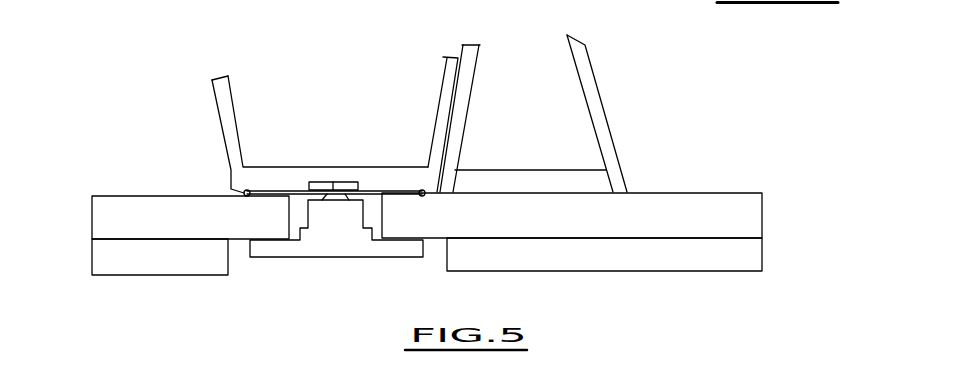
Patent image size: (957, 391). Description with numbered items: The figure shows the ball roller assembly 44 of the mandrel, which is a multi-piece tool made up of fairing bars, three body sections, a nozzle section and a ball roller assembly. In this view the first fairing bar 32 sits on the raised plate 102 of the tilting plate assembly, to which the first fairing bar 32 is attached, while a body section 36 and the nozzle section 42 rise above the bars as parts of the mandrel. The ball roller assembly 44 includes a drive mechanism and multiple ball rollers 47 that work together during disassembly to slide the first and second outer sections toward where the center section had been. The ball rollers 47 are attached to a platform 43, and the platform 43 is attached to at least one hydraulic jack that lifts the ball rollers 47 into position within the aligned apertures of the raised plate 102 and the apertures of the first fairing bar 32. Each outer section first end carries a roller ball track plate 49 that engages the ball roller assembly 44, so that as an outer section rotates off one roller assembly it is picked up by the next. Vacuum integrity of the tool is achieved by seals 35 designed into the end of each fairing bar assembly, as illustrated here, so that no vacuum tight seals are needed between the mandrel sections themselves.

The first fairing bar 32 is at (723, 192).
The seals 35 is at (244, 192).
The body section 36 is at (220, 114).
The nozzle section 42 is at (597, 91).
The platform 43 is at (396, 249).
The ball roller assembly 44 is at (333, 257).
The ball rollers 47 is at (333, 182).
The roller ball track plate 49 is at (338, 182).
The raised plate 102 is at (206, 276).